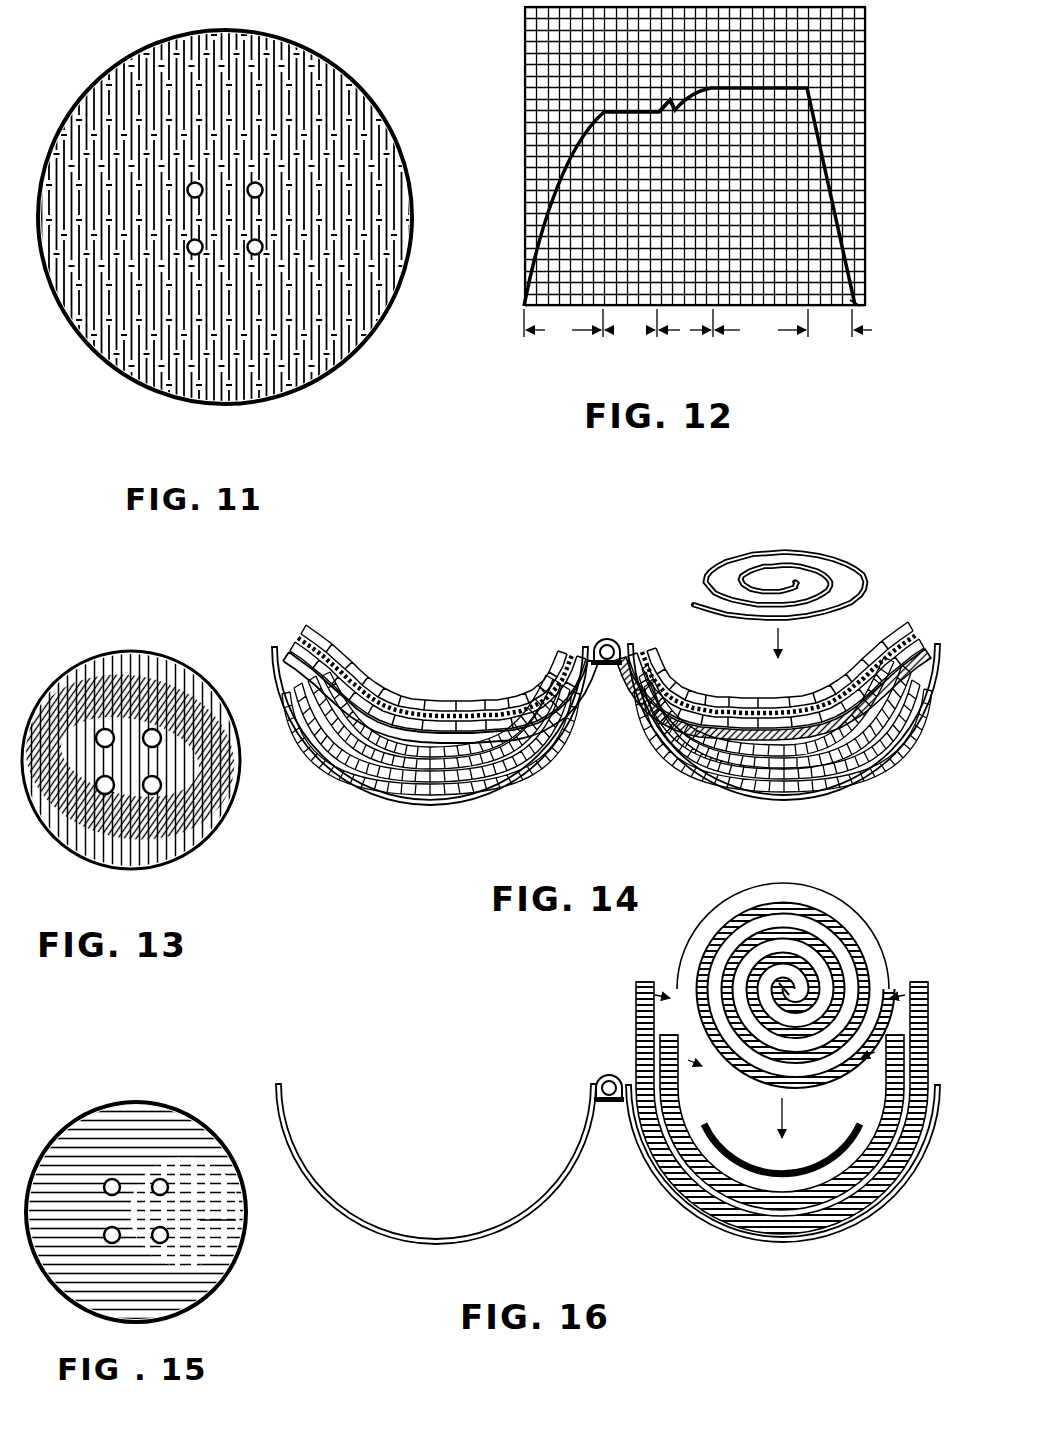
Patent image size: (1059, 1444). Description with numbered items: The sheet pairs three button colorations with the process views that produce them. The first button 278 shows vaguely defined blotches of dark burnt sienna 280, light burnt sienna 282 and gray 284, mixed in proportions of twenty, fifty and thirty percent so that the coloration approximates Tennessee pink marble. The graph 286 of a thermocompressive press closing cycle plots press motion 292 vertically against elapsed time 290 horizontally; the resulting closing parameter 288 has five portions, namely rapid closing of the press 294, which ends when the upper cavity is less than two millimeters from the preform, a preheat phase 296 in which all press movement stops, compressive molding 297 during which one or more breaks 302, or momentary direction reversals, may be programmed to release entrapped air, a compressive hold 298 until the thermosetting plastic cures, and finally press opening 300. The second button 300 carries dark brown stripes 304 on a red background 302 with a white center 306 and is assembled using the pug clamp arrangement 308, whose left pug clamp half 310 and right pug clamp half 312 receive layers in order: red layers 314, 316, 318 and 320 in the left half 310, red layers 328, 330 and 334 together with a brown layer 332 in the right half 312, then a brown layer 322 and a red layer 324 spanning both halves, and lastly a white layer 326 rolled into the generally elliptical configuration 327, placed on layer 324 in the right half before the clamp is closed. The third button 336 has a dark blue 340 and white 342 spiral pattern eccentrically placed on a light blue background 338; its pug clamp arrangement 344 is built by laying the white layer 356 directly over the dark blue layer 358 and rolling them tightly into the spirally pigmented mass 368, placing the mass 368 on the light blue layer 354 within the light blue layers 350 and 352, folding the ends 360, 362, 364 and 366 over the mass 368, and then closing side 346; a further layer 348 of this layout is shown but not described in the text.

In FIG. 11, the button 278 is at (316, 389).
In FIG. 11, the dark burnt sienna blotches 280 is at (372, 120).
In FIG. 11, the light burnt sienna blotches 282 is at (334, 66).
In FIG. 11, the gray blotches 284 is at (300, 44).
In FIG. 12, the graph 286 is at (652, 380).
In FIG. 12, the closing parameter 288 is at (850, 262).
In FIG. 12, the elapsed time 290 is at (862, 302).
In FIG. 12, the press motion 292 is at (525, 151).
In FIG. 12, the rapid closing of press 294 is at (563, 330).
In FIG. 12, the preheat phase 296 is at (630, 330).
In FIG. 12, the compressive molding 297 is at (692, 333).
In FIG. 12, the compressive hold 298 is at (760, 330).
In FIG. 12, the button 300 is at (841, 330).
In FIG. 13, the button 300 is at (100, 898).
In FIG. 12, the red background 302 is at (671, 98).
In FIG. 13, the red background 302 is at (130, 657).
In FIG. 13, the dark brown stripes 304 is at (190, 690).
In FIG. 13, the white center 306 is at (113, 776).
In FIG. 14, the pug clamp arrangement 308 is at (597, 852).
In FIG. 14, the left pug clamp half 310 is at (486, 790).
In FIG. 14, the right pug clamp half 312 is at (665, 738).
In FIG. 14, the red layer 314 is at (528, 748).
In FIG. 14, the red layer 316 is at (545, 738).
In FIG. 14, the red layer 318 is at (556, 690).
In FIG. 14, the red layer 320 is at (287, 650).
In FIG. 14, the brown layer 322 is at (322, 632).
In FIG. 14, the red layer 324 is at (362, 662).
In FIG. 14, the white layer 326 is at (763, 609).
In FIG. 14, the elliptical configuration 327 is at (803, 566).
In FIG. 14, the red layer 328 is at (688, 768).
In FIG. 14, the red layer 330 is at (800, 775).
In FIG. 14, the brown layer 332 is at (840, 750).
In FIG. 14, the red layer 334 is at (650, 650).
In FIG. 15, the button 336 is at (192, 1330).
In FIG. 15, the light blue background 338 is at (132, 1108).
In FIG. 15, the dark blue spiral 340 is at (218, 1192).
In FIG. 15, the white spiral 342 is at (238, 1220).
In FIG. 16, the pug clamp arrangement 344 is at (555, 1288).
In FIG. 16, the closing side 346 is at (534, 1204).
In FIG. 16, the outer U layer 348 is at (690, 1204).
In FIG. 16, the light blue layer 350 is at (812, 1218).
In FIG. 16, the light blue layer 352 is at (750, 1188).
In FIG. 16, the light blue layer 354 is at (834, 1138).
In FIG. 16, the white layer 356 is at (682, 985).
In FIG. 16, the dark blue layer 358 is at (862, 936).
In FIG. 16, the layer end 360 is at (672, 1040).
In FIG. 16, the layer end 362 is at (637, 988).
In FIG. 16, the layer end 364 is at (897, 1053).
In FIG. 16, the layer end 366 is at (924, 978).
In FIG. 16, the spirally pigmented mass 368 is at (810, 944).